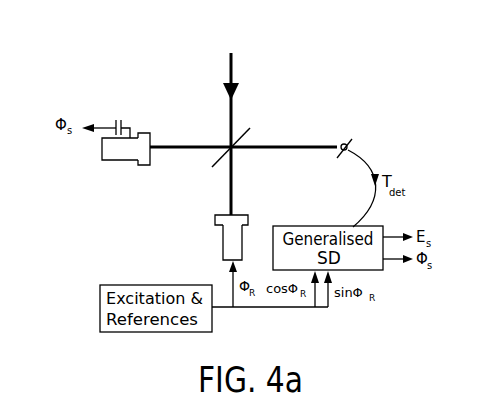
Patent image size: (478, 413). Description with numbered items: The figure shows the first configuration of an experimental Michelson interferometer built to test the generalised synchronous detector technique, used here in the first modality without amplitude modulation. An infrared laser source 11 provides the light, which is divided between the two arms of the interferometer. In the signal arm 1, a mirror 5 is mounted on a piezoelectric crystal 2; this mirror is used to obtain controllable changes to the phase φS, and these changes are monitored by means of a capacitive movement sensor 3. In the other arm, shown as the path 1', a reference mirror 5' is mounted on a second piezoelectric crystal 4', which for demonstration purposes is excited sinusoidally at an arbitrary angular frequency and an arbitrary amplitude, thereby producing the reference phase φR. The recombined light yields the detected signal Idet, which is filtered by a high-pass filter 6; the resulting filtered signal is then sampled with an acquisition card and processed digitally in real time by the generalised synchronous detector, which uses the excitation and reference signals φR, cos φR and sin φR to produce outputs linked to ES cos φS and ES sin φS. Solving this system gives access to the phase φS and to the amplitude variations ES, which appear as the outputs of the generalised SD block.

The infrared laser source 11 is at (233, 88).
The signal arm 1 is at (243, 112).
The second beam path to reference mirror 1' is at (262, 181).
The capacitive movement sensor 3 is at (127, 124).
The piezoelectric crystal 2 is at (107, 161).
The mirror 5 is at (137, 182).
The reference mirror 5' is at (204, 229).
The second piezoelectric crystal 4' is at (203, 252).
The high-pass filter 6 is at (340, 140).